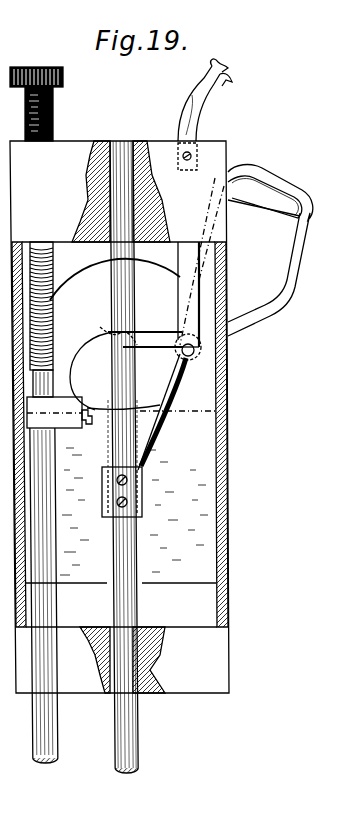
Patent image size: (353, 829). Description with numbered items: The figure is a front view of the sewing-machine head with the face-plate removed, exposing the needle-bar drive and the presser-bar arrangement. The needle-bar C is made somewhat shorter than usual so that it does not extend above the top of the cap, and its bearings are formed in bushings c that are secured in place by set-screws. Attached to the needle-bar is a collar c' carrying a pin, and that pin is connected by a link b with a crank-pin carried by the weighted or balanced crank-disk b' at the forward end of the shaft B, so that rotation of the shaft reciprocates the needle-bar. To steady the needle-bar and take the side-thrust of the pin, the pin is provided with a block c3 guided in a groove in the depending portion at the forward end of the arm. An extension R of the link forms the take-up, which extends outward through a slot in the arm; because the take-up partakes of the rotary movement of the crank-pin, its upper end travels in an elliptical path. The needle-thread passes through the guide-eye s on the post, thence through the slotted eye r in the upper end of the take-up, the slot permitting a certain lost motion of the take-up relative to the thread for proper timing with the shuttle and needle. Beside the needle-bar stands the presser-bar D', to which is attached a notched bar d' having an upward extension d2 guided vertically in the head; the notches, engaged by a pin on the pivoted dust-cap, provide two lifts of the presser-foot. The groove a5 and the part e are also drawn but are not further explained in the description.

The needle-bar C is at (135, 608).
The bushings c is at (138, 420).
The collar c' is at (144, 461).
The block c3 is at (142, 480).
The link b is at (162, 412).
The crank-disk b' is at (154, 359).
The shaft B is at (132, 335).
The notched bar d' is at (103, 368).
The upward extension d2 is at (190, 265).
The presser-bar D' is at (57, 595).
The take-up R is at (304, 235).
The slotted eye r is at (265, 197).
The guide-eye s is at (203, 112).
The casing cavity a5 is at (110, 543).
The pin e is at (187, 156).